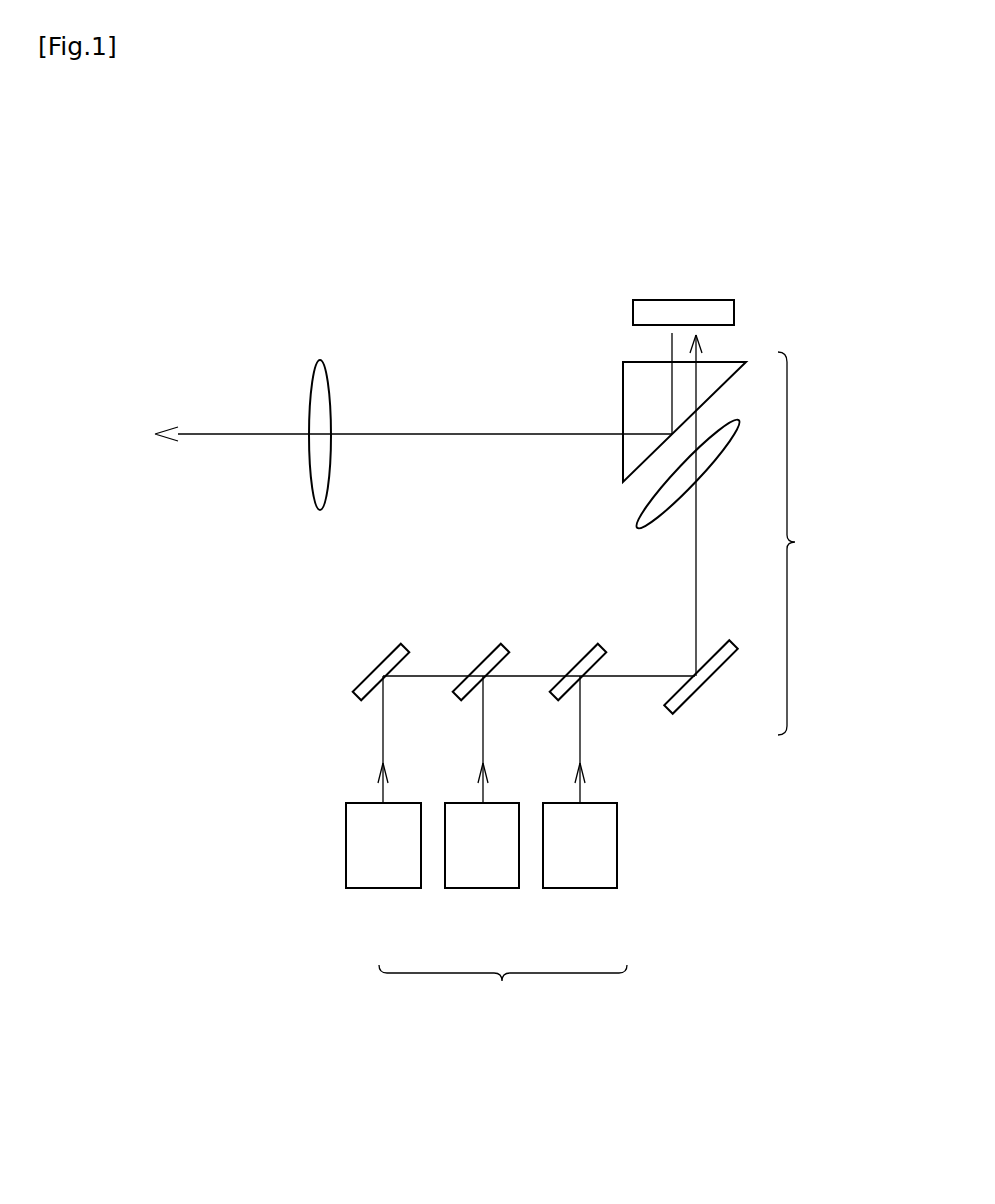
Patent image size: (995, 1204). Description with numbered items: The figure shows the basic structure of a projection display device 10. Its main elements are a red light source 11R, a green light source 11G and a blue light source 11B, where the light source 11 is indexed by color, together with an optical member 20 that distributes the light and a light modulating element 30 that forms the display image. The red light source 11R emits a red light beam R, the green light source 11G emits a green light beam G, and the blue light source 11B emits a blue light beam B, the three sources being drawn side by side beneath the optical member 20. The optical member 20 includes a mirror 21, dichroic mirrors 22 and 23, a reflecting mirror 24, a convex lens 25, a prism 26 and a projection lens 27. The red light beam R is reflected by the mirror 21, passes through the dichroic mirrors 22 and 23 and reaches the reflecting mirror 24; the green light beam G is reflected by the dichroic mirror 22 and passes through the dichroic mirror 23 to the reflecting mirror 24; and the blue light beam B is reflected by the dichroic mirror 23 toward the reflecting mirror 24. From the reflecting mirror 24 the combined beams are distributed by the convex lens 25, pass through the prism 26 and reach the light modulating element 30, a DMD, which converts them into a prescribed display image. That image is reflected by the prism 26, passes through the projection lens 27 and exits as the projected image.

The projection display device 10 is at (210, 280).
The light source 11 is at (503, 984).
The red light source 11R is at (382, 870).
The green light source 11G is at (481, 870).
The blue light source 11B is at (579, 870).
The red light beam R is at (383, 738).
The green light beam G is at (483, 738).
The blue light beam B is at (580, 738).
The optical member 20 is at (797, 542).
The mirror 21 is at (392, 653).
The dichroic mirror 22 is at (490, 653).
The dichroic mirror 23 is at (588, 653).
The reflecting mirror 24 is at (708, 680).
The convex lens 25 is at (636, 522).
The prism 26 is at (623, 390).
The projection lens 27 is at (319, 360).
The light modulating element 30 is at (682, 298).